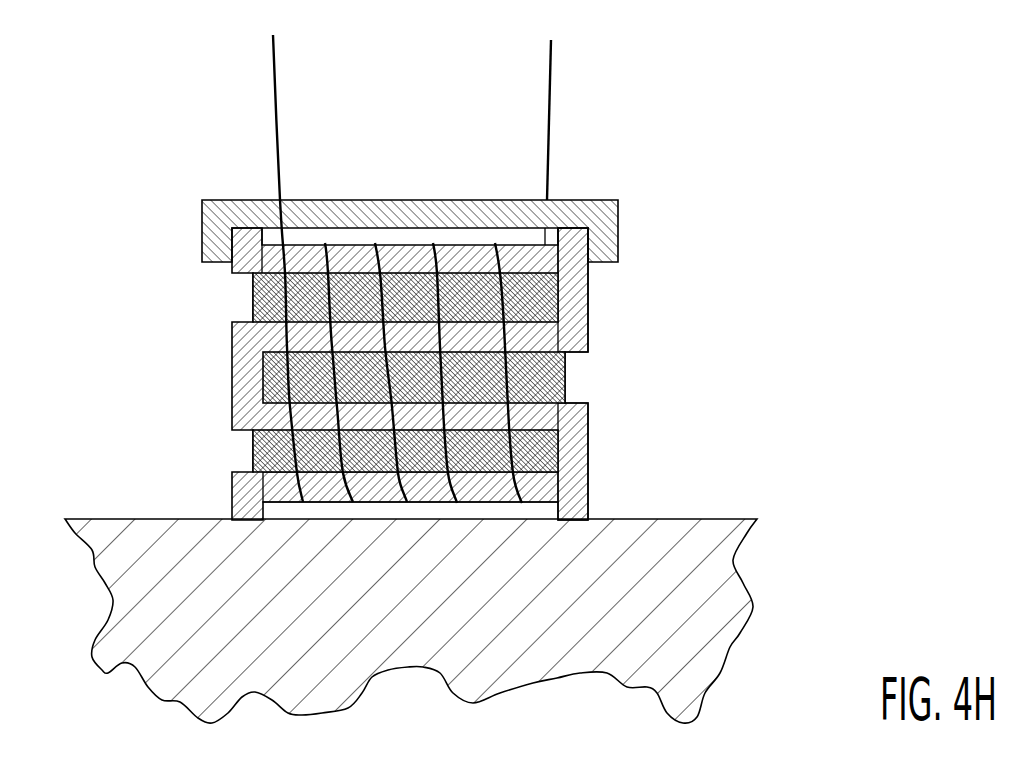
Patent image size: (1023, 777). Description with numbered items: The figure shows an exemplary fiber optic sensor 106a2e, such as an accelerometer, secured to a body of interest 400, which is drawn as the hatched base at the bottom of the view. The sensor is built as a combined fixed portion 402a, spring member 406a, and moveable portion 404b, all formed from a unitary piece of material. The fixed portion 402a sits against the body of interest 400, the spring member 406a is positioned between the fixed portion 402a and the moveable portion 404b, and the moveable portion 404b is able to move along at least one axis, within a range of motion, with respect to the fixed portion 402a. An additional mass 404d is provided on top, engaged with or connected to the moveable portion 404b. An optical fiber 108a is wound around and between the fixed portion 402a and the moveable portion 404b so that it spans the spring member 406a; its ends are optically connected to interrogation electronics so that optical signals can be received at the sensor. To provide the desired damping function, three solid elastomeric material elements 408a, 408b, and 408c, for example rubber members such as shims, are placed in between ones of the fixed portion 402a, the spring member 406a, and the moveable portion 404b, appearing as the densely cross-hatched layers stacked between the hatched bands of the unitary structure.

The optical fiber 108a is at (272, 72).
The fiber optic sensor 106a2e is at (704, 151).
The moveable portion 404b is at (463, 248).
The additional mass 404d is at (620, 242).
The spring member 406a is at (548, 420).
The solid elastomeric material element 408a is at (252, 298).
The solid elastomeric material element 408b is at (262, 367).
The solid elastomeric material element 408c is at (253, 448).
The body of interest 400 is at (200, 645).
The fixed portion 402a is at (543, 497).